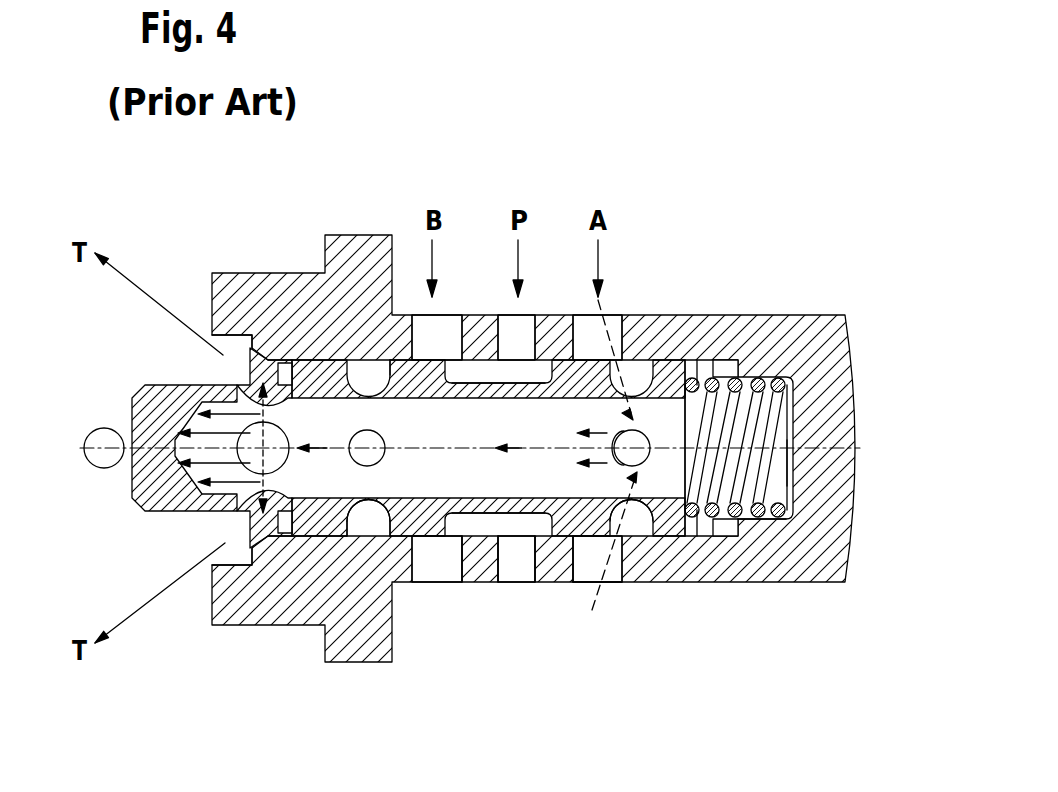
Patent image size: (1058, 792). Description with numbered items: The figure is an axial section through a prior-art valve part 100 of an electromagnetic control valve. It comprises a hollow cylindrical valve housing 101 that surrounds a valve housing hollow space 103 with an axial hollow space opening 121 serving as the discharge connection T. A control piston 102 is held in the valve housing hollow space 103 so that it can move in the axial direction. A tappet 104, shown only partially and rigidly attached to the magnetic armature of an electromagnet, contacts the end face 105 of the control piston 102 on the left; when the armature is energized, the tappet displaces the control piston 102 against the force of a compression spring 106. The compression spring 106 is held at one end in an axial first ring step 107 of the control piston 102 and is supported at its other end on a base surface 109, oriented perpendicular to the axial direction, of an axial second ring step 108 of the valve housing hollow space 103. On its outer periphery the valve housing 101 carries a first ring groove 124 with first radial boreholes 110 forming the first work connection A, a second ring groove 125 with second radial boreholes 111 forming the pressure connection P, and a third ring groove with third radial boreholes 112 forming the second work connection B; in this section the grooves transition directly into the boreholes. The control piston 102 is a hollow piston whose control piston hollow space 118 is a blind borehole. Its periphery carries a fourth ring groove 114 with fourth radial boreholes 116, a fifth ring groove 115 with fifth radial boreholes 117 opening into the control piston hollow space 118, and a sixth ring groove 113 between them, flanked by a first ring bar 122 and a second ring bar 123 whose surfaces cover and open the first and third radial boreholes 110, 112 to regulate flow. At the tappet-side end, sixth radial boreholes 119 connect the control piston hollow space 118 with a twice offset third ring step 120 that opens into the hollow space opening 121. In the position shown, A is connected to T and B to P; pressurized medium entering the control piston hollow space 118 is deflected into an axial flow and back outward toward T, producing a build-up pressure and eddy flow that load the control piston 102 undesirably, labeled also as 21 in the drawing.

The valve part 100 is at (757, 135).
The valve housing 101 is at (798, 315).
The control piston 102 is at (592, 547).
The valve housing hollow space 103 is at (707, 365).
The tappet 104 is at (83, 449).
The end face 105 is at (133, 407).
The compression spring 106 is at (793, 508).
The first ring step 107 is at (692, 378).
The second ring step 108 is at (777, 518).
The base surface 109 is at (787, 463).
The first radial boreholes 110 is at (583, 316).
The second radial boreholes 111 is at (505, 316).
The third radial boreholes 112 is at (420, 316).
The sixth ring groove 113 is at (485, 527).
The fourth ring groove 114 is at (640, 528).
The fifth ring groove 115 is at (370, 530).
The fourth radial boreholes 116 is at (665, 540).
The fifth radial boreholes 117 is at (340, 560).
The control piston hollow space 118 is at (472, 437).
The sixth radial boreholes 119 is at (272, 393).
The third ring step 120 is at (228, 347).
The hollow space opening 121 is at (205, 365).
The first ring bar 122 is at (618, 316).
The second ring bar 123 is at (625, 365).
The first ring groove 124 is at (528, 582).
The second ring groove 125 is at (458, 582).
The annular recess 21 is at (240, 537).